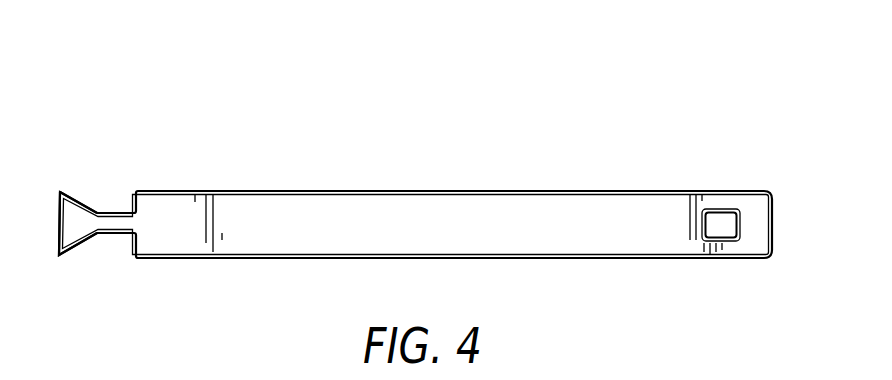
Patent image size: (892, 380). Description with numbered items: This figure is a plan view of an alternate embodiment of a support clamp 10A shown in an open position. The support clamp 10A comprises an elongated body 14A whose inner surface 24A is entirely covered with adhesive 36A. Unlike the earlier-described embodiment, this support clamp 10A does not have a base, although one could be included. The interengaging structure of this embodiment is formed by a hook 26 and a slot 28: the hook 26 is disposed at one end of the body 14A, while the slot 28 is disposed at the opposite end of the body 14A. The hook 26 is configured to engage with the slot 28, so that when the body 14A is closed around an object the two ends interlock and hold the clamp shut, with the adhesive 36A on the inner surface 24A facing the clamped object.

The support clamp 10A is at (415, 178).
The body 14A is at (398, 190).
The hook 26 is at (59, 191).
The inner surface 24A is at (308, 235).
The adhesive 36A is at (597, 226).
The slot 28 is at (727, 236).